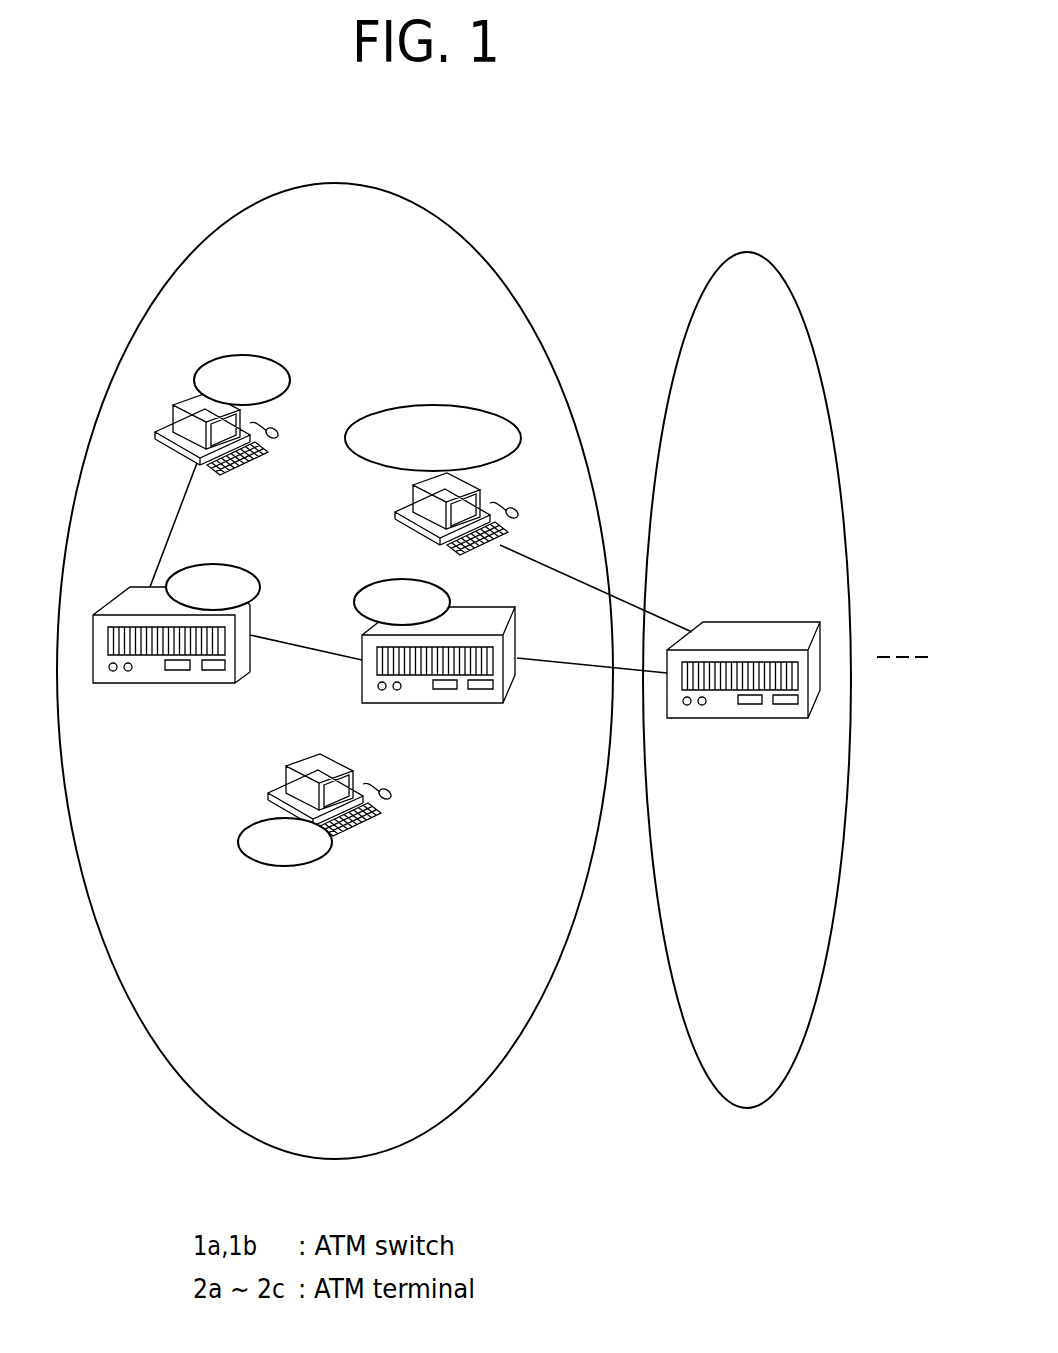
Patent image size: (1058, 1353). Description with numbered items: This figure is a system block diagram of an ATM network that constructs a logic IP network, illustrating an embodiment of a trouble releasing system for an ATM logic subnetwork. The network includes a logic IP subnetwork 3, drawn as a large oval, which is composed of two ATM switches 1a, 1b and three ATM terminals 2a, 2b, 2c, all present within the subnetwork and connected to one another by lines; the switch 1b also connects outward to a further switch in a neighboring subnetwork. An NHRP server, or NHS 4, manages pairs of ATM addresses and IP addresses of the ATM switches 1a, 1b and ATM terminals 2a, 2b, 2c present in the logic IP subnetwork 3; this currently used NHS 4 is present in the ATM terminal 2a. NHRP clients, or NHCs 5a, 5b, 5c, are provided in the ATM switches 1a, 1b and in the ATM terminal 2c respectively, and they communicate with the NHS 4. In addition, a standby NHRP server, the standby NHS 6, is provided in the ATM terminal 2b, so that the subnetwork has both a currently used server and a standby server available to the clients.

The ATM switch 1a is at (112, 683).
The ATM switch 1b is at (518, 632).
The ATM terminal 2a is at (238, 473).
The ATM terminal 2b is at (493, 498).
The ATM terminal 2c is at (391, 792).
The logic IP subnetwork 3 is at (482, 1090).
The NHRP server (NHS) 4 is at (260, 356).
The NHRP client (NHC) 5a is at (253, 573).
The NHRP client (NHC) 5b is at (450, 595).
The NHRP client (NHC) 5c is at (310, 865).
The standby NHRP server (standby NHS) 6 is at (420, 405).